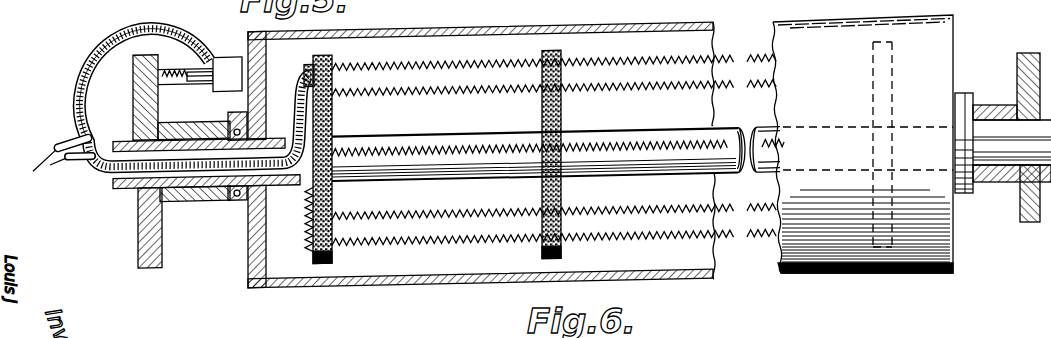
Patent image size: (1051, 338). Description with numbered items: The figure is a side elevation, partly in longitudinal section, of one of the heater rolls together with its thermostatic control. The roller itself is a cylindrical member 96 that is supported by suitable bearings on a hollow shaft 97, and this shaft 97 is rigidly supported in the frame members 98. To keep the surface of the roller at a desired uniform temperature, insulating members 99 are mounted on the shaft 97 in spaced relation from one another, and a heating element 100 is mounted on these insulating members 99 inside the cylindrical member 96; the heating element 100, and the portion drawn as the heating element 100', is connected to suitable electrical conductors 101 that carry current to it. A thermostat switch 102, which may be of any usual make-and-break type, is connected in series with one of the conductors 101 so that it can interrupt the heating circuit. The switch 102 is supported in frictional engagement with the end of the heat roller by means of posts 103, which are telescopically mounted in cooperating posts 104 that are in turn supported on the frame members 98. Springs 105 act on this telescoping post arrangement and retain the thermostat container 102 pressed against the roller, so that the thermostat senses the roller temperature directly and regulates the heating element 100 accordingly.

The cylindrical member 96 is at (280, 290).
The hollow shaft 97 is at (127, 192).
The frame members 98 is at (152, 270).
The insulating members 99 is at (334, 259).
The heating element 100 is at (554, 68).
The lower springs 100' is at (554, 235).
The electrical conductors 101 is at (163, 105).
The thermostat switch 102 is at (228, 58).
The posts 103 is at (207, 83).
The cooperating posts 104 is at (172, 70).
The springs 105 is at (176, 87).